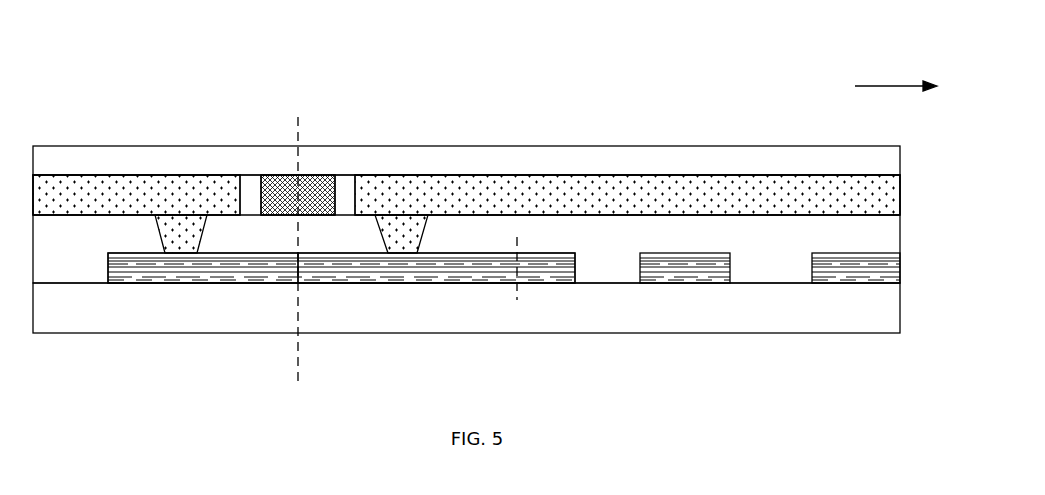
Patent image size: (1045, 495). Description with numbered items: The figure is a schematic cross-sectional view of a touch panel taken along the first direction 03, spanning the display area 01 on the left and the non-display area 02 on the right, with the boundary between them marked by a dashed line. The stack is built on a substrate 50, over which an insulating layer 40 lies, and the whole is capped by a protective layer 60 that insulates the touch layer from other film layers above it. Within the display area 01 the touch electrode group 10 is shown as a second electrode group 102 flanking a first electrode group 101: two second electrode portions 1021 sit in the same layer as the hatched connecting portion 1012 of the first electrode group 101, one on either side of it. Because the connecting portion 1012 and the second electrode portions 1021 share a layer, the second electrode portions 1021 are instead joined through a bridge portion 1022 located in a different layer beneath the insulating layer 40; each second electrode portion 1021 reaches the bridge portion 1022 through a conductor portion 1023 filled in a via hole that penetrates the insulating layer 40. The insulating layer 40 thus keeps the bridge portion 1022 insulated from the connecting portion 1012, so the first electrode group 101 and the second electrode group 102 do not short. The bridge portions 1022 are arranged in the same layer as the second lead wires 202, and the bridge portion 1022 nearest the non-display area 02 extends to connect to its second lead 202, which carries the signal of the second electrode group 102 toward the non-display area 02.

The touch electrode group 10 is at (162, 64).
The second electrode group 102 is at (113, 106).
The second electrode portion 1021 is at (205, 197).
The bridge portion 1022 is at (128, 274).
The conductor portion 1023 is at (173, 230).
The first electrode group 101 is at (317, 197).
The connecting portion 1012 is at (298, 195).
The second lead wire 202 is at (558, 272).
The protective layer 60 is at (870, 163).
The insulating layer 40 is at (872, 238).
The substrate 50 is at (873, 317).
The display area 01 is at (221, 350).
The non-display area 02 is at (366, 350).
The first direction 03 is at (883, 89).